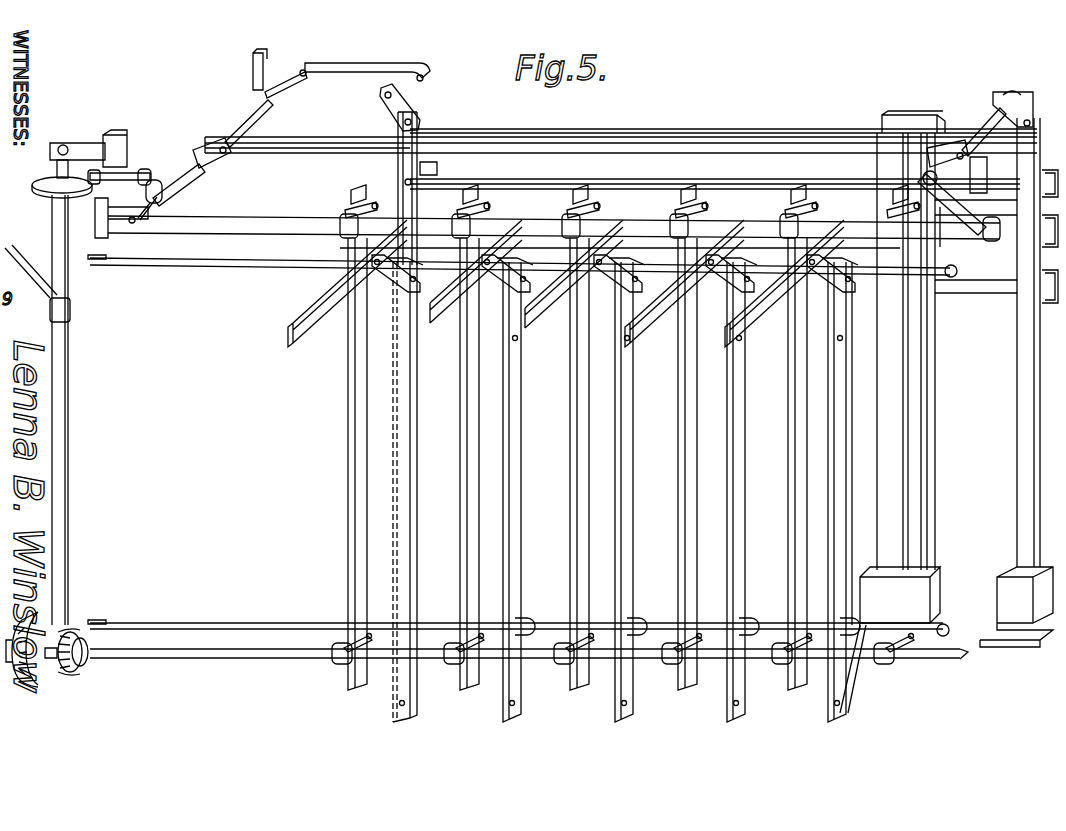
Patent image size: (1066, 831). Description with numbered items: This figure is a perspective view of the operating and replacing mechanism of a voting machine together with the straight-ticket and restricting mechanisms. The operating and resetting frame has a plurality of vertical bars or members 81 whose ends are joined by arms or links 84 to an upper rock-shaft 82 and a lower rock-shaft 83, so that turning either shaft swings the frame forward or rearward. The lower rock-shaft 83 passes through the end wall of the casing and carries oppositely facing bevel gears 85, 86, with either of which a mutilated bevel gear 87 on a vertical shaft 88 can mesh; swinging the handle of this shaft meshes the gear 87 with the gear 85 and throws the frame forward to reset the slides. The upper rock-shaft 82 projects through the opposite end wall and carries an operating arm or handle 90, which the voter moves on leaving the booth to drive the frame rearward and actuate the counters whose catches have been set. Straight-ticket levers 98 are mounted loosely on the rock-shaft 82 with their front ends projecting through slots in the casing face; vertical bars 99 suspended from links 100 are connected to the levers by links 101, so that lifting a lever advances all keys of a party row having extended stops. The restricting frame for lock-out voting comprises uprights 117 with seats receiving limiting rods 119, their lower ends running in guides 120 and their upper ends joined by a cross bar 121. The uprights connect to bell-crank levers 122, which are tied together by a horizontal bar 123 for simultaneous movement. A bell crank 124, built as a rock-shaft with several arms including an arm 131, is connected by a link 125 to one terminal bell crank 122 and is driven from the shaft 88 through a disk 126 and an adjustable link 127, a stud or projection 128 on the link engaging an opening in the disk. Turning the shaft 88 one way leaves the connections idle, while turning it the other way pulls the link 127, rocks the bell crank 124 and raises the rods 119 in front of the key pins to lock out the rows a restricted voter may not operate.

The vertical bars or members 81 is at (358, 683).
The upper rock-shaft 82 is at (260, 225).
The lower rock-shaft 83 is at (208, 658).
The arms or links 84 is at (498, 217).
The bevel gear 85 is at (33, 673).
The bevel gear 86 is at (93, 625).
The mutilated bevel gear 87 is at (70, 632).
The vertical shaft 88 is at (62, 375).
The operating arm or handle 90 is at (957, 237).
The straight-ticket levers 98 is at (313, 323).
The vertical bars 99 is at (520, 563).
The links 100 is at (417, 690).
The links 101 is at (462, 315).
The uprights 117 is at (1022, 457).
The limiting rods 119 is at (983, 293).
The guides 120 is at (1003, 592).
The cross bar 121 is at (807, 132).
The bell-crank levers 122 is at (410, 100).
The horizontal bar 123 is at (707, 145).
The bell crank 124 is at (290, 87).
The link 125 is at (367, 70).
The disk 126 is at (38, 185).
The link 127 is at (127, 167).
The stud or projection 128 is at (85, 262).
The arm 131 is at (210, 147).